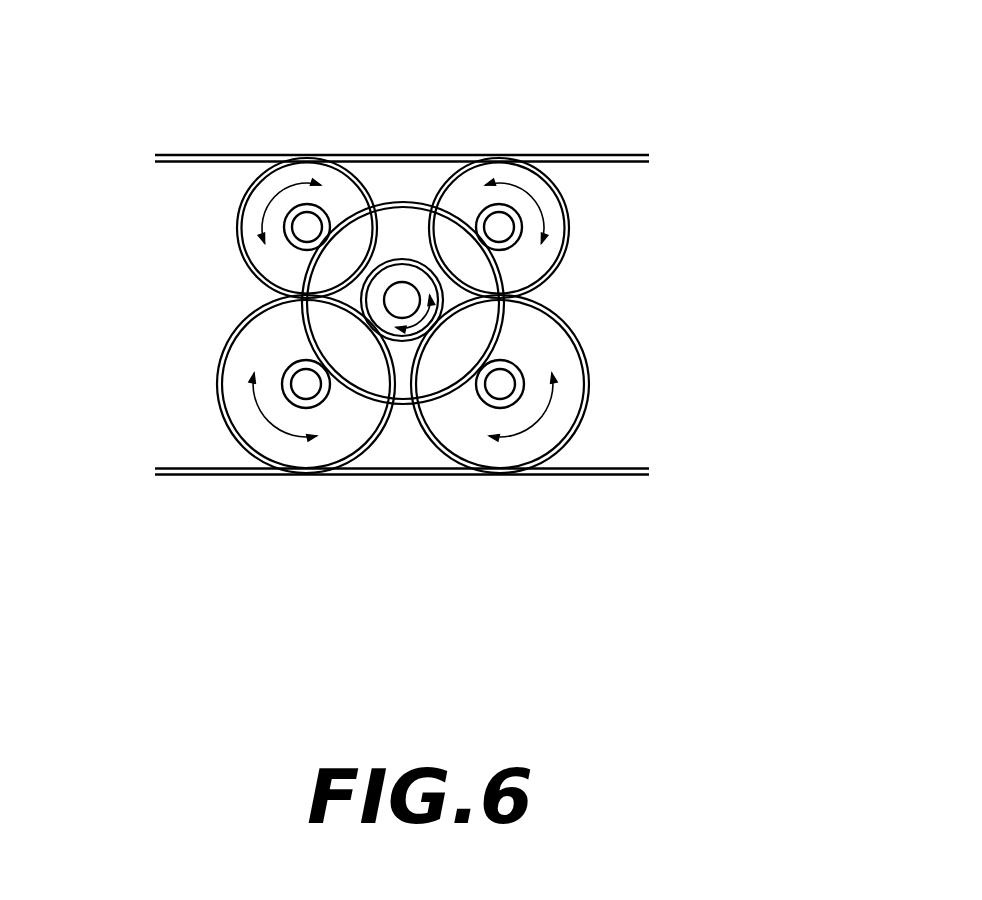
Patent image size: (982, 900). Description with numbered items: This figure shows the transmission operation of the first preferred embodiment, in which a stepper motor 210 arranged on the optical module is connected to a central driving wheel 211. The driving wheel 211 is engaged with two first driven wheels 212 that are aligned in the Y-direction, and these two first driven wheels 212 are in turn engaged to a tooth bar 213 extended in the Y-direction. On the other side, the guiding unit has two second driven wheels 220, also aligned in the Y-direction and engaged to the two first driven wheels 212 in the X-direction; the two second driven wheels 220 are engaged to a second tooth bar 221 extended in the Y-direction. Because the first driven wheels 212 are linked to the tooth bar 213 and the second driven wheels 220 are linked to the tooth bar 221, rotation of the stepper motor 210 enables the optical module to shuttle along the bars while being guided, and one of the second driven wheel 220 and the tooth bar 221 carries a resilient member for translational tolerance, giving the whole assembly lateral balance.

The stepper motor 210 is at (403, 276).
The driving wheel 211 is at (403, 403).
The first driven wheels 212 is at (232, 387).
The tooth bar 213 is at (615, 470).
The second driven wheels 220 is at (253, 234).
The tooth bar 221 is at (606, 160).